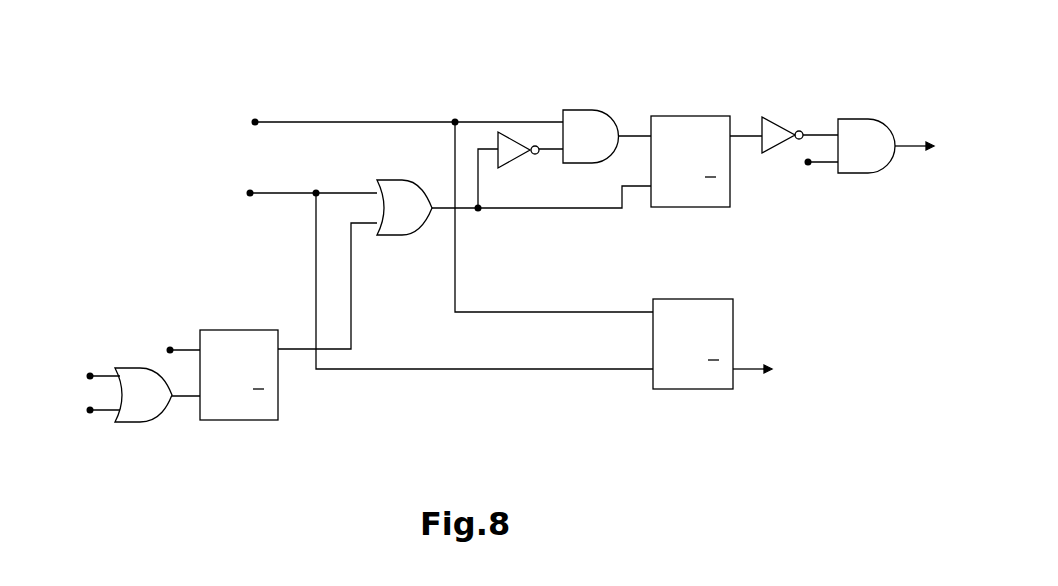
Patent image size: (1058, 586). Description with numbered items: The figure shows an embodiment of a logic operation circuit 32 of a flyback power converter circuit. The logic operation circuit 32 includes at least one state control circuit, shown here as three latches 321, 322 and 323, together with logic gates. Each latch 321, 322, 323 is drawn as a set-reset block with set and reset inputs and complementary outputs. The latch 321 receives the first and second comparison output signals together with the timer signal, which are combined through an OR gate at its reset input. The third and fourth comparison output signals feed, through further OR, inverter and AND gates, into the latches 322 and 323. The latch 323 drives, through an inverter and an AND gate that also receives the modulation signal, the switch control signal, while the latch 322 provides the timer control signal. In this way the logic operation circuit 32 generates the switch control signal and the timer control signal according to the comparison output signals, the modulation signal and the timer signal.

The logic operation circuit 32 is at (439, 53).
The latch 321 is at (211, 428).
The latch 322 is at (668, 400).
The latch 323 is at (665, 216).